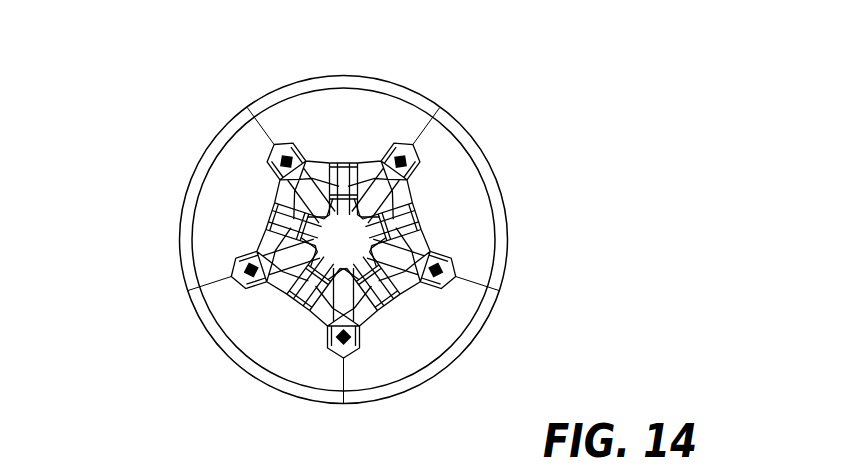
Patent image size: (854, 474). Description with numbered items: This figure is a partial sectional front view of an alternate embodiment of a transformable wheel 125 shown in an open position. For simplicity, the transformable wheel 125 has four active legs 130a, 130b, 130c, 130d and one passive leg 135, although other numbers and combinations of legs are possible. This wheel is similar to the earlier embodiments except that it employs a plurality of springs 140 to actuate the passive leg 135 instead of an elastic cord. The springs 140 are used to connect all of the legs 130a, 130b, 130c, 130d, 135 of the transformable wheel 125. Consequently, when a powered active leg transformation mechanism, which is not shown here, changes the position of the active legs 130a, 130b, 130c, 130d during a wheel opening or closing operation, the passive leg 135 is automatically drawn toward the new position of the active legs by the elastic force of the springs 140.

The transformable wheel 125 is at (127, 78).
The passive leg 135 is at (222, 193).
The active leg 130a is at (368, 120).
The active leg 130b is at (452, 208).
The active leg 130c is at (413, 333).
The active leg 130d is at (265, 328).
The springs 140 is at (452, 263).